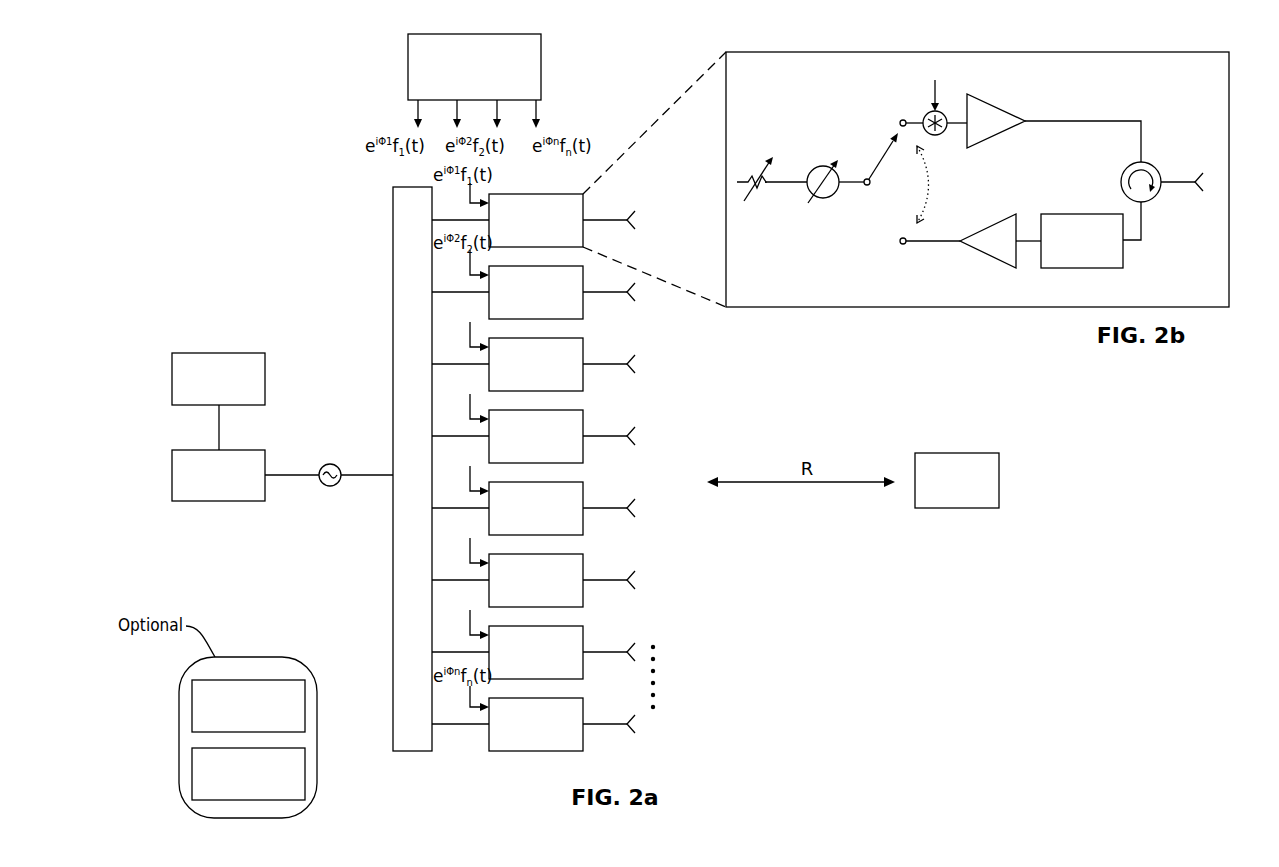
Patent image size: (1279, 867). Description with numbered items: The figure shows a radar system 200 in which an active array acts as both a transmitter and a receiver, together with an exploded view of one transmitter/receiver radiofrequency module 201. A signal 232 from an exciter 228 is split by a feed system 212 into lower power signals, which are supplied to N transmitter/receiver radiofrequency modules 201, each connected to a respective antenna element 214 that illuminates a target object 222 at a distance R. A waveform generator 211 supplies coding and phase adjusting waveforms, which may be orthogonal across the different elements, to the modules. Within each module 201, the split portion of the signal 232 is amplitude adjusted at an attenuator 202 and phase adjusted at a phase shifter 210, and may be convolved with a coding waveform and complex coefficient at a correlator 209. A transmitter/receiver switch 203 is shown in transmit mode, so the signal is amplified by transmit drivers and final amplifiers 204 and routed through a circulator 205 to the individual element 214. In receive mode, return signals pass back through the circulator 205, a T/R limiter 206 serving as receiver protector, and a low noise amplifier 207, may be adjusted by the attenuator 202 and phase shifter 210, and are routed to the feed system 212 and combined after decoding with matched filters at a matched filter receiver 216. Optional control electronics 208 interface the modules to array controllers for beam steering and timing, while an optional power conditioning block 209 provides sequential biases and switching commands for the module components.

In FIG. 2a, the radar system 200 is at (785, 720).
In FIG. 2a, the transmitter/receiver radiofrequency module 201 is at (543, 194).
In FIG. 2b, the transmitter/receiver radiofrequency module 201 is at (769, 308).
In FIG. 2b, the attenuator 202 is at (758, 188).
In FIG. 2b, the transmitter/receiver switch 203 is at (881, 160).
In FIG. 2b, the transmit drivers and final amplifiers 204 is at (995, 136).
In FIG. 2b, the circulator 205 is at (1126, 168).
In FIG. 2b, the T/R limiter 206 is at (1066, 214).
In FIG. 2b, the low noise amplifier 207 is at (991, 226).
In FIG. 2a, the control electronics 208 is at (192, 708).
In FIG. 2a, the power conditioning block / correlator 209 is at (192, 776).
In FIG. 2b, the power conditioning block / correlator 209 is at (925, 114).
In FIG. 2b, the phase shifter 210 is at (823, 198).
In FIG. 2a, the waveform generator 211 is at (541, 62).
In FIG. 2a, the feed system 212 is at (393, 343).
In FIG. 2a, the antenna element 214 is at (625, 204).
In FIG. 2b, the antenna element 214 is at (1195, 169).
In FIG. 2a, the matched filter receiver 216 is at (219, 353).
In FIG. 2a, the target object 222 is at (982, 453).
In FIG. 2a, the exciter 228 is at (219, 501).
In FIG. 2a, the signal 232 is at (330, 486).